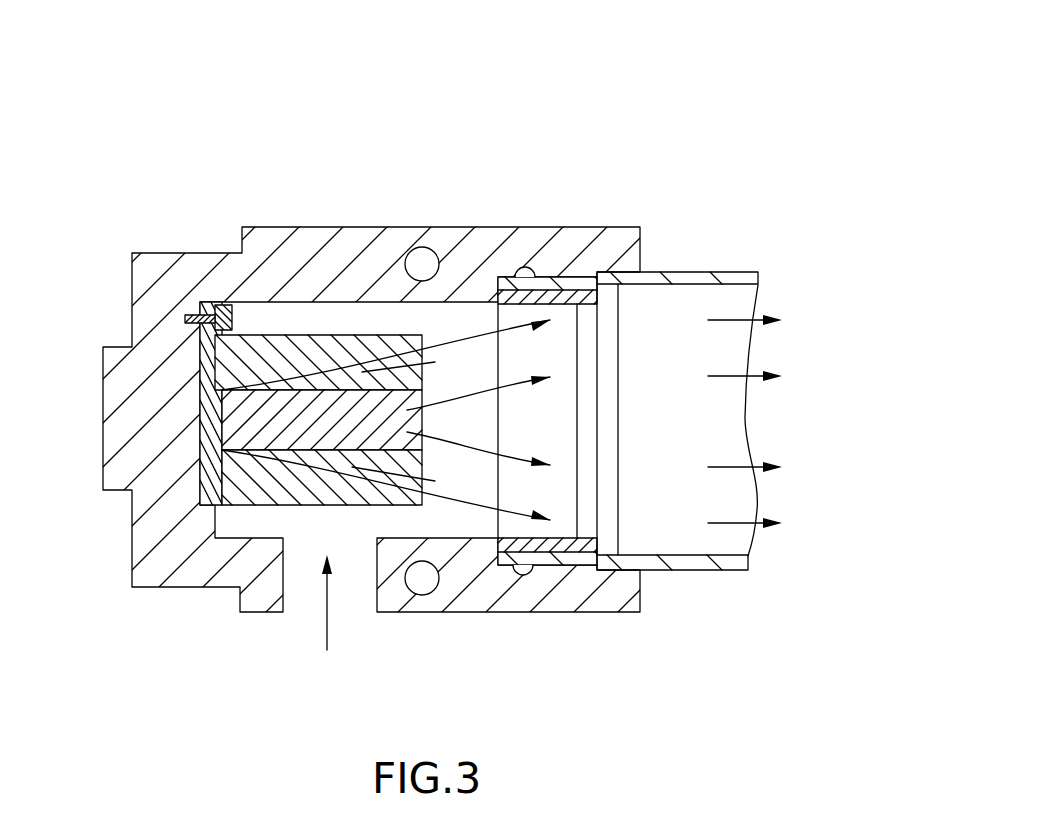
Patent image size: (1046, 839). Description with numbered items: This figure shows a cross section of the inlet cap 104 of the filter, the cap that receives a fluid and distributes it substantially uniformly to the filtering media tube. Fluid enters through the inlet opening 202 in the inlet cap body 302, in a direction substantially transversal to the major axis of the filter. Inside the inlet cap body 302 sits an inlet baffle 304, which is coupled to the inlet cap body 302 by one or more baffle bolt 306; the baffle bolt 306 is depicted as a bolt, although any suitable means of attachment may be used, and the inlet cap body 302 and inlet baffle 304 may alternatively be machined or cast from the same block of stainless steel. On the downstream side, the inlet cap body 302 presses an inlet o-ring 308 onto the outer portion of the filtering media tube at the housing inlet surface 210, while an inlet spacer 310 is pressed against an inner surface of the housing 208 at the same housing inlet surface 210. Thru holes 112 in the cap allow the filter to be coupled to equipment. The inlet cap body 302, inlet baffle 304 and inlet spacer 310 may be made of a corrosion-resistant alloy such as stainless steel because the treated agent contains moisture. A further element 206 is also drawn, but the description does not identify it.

The inlet cap 104 is at (655, 140).
The thru holes 112 is at (430, 249).
The inlet opening 202 is at (307, 620).
The outlet flow 206 is at (738, 538).
The housing 208 is at (728, 272).
The housing inlet surface 210 is at (627, 610).
The inlet cap body 302 is at (130, 437).
The inlet baffle 304 is at (230, 493).
The baffle bolt 306 is at (187, 317).
The inlet o-ring 308 is at (527, 567).
The inlet spacer 310 is at (580, 277).